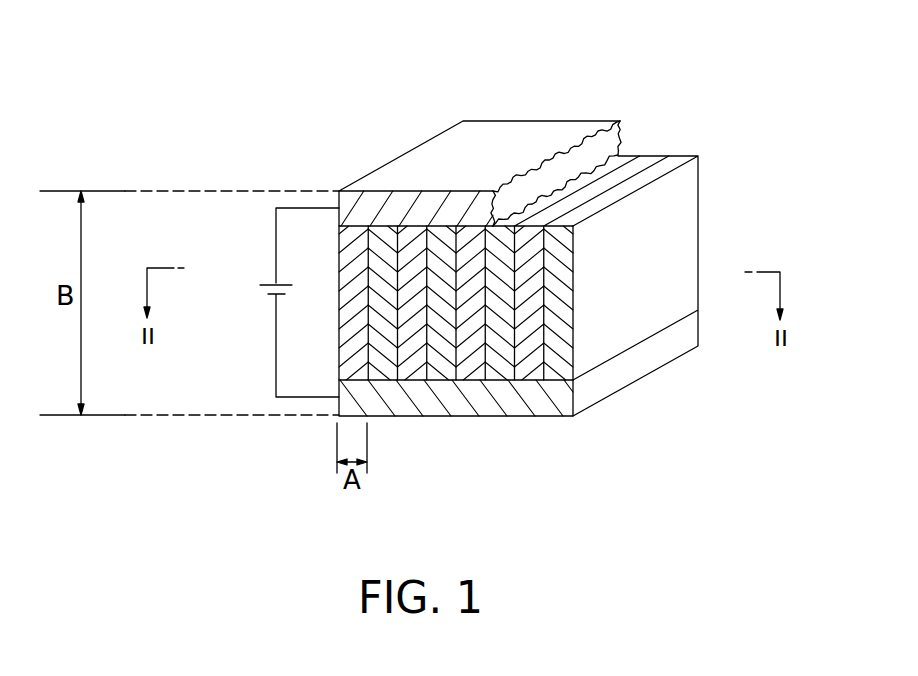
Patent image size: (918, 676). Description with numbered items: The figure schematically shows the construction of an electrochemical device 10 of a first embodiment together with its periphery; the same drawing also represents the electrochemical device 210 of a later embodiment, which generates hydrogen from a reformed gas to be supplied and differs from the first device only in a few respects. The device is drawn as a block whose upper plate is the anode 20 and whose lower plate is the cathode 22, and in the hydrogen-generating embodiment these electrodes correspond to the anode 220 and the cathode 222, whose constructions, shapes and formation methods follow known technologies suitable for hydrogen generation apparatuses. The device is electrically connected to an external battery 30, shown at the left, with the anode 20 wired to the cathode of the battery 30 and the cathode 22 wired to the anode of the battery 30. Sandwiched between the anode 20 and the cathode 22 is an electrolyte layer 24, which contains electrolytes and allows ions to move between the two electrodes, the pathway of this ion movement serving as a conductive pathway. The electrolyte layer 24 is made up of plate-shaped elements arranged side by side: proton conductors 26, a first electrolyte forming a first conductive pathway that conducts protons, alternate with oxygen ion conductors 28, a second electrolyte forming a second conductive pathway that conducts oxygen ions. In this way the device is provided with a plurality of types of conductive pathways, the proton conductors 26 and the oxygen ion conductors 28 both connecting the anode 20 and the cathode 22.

The electrochemical device 10 is at (564, 242).
The electrochemical device 210 is at (687, 104).
The anode 20 is at (480, 145).
The anode 220 is at (487, 140).
The cathode 22 is at (456, 429).
The cathode 222 is at (490, 400).
The electrolyte layer 24 is at (706, 244).
The proton conductors 26 is at (352, 240).
The oxygen ion conductors 28 is at (387, 242).
The battery 30 is at (272, 282).